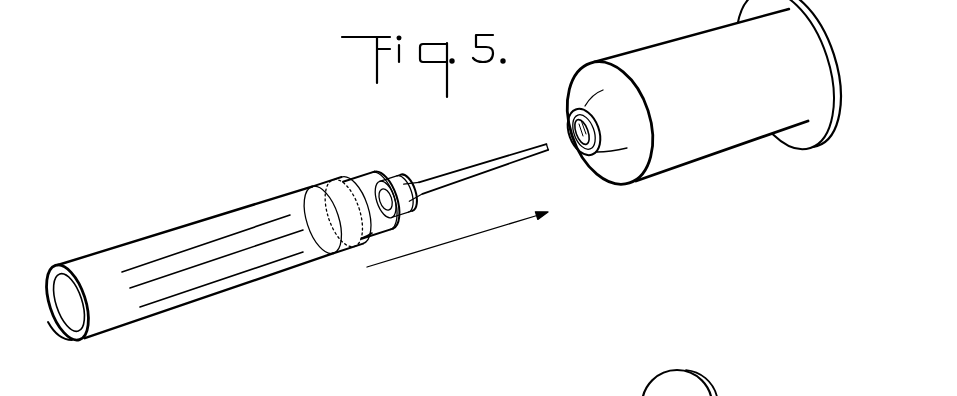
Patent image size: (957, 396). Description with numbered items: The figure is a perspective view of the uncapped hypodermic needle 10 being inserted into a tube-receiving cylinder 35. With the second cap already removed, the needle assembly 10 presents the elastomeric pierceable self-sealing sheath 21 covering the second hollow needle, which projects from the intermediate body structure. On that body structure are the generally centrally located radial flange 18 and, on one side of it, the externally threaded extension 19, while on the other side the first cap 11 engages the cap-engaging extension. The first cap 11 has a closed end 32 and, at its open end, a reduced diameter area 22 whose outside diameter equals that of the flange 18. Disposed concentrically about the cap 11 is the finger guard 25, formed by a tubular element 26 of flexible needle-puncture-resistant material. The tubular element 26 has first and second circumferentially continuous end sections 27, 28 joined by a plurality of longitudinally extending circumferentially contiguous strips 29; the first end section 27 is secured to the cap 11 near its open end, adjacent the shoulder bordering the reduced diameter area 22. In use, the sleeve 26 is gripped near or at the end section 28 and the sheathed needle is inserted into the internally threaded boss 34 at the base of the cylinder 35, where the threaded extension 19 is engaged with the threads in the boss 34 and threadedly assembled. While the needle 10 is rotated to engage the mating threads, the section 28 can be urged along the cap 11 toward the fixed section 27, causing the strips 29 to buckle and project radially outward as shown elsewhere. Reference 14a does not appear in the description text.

The double pointed multiple sample hypodermic needle 10 is at (238, 190).
The first cap 11 is at (50, 282).
The hub collar 14a is at (328, 188).
The radial flange 18 is at (362, 183).
The externally threaded extension 19 is at (392, 180).
The elastomeric pierceable self-sealing sheath 21 is at (492, 160).
The reduced diameter area 22 is at (368, 234).
The finger guard 25 is at (264, 196).
The tubular element 26 is at (83, 272).
The first end section 27 is at (316, 254).
The second end section 28 is at (106, 283).
The longitudinally extending strips 29 is at (195, 235).
The closed end 32 is at (62, 334).
The internally threaded boss 34 is at (614, 150).
The cylinder 35 is at (697, 152).